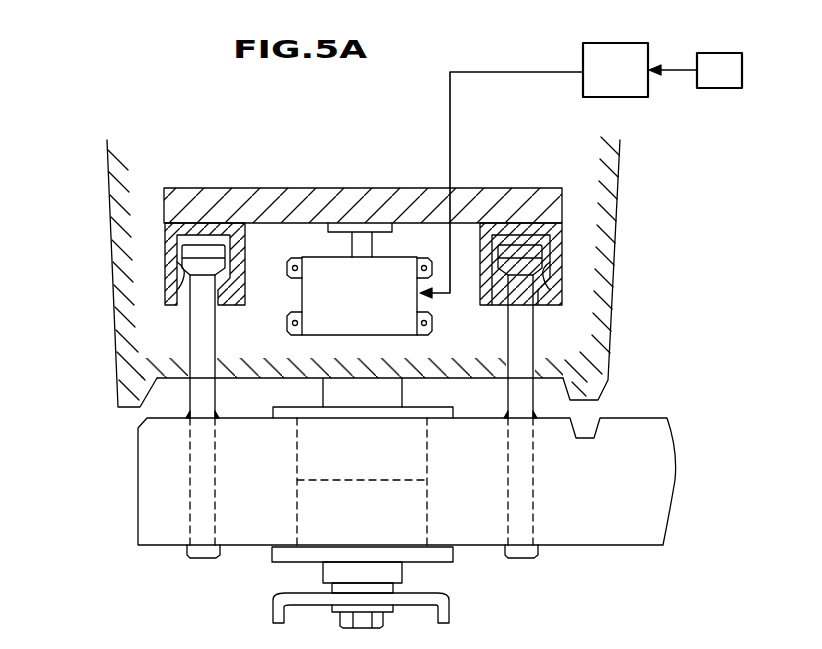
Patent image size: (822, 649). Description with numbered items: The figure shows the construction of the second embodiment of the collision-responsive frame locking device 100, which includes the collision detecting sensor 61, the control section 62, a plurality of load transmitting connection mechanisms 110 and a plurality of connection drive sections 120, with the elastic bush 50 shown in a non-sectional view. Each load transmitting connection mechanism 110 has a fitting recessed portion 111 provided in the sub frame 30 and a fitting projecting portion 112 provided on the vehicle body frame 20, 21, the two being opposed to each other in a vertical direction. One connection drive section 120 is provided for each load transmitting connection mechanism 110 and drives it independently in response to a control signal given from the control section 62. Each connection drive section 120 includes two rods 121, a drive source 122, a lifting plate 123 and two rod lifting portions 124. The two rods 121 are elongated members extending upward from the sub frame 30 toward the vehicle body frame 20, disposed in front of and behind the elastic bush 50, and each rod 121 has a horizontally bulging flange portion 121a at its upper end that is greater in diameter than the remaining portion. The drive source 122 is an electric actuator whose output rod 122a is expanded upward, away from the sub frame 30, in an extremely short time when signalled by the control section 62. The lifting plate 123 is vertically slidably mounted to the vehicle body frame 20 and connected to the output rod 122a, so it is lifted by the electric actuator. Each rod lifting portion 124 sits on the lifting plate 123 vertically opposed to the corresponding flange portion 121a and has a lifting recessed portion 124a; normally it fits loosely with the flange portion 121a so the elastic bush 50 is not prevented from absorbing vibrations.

The collision-responsive frame locking device 100 is at (91, 127).
The connection drive section 120 is at (185, 185).
The lifting plate 123 is at (248, 205).
The drive source 122 is at (320, 268).
The output rod 122a is at (363, 238).
The rod lifting portion 124 is at (377, 273).
The lifting recessed portion 124a is at (167, 268).
The rod 121 is at (376, 379).
The flange portion 121a is at (178, 255).
The load transmitting connection mechanism 110 is at (457, 383).
The fitting projecting portion 112 is at (565, 388).
The fitting recessed portion 111 is at (592, 420).
The vehicle body frame 20 is at (443, 272).
The chamber wall 21 is at (626, 163).
The sub frame 30 is at (684, 478).
The elastic bush 50 is at (280, 568).
The control section 62 is at (625, 52).
The collision detecting sensor 61 is at (718, 60).